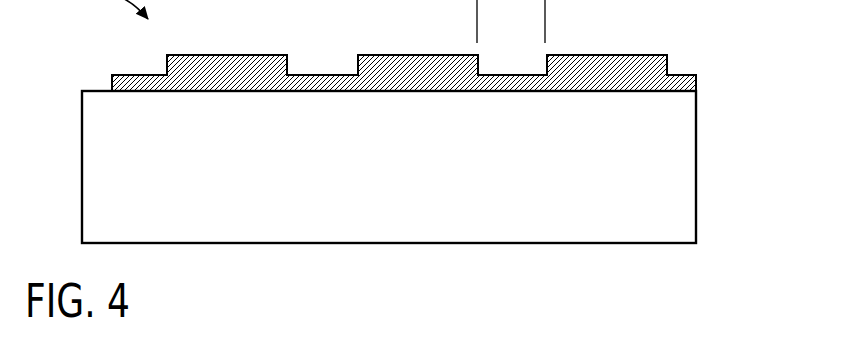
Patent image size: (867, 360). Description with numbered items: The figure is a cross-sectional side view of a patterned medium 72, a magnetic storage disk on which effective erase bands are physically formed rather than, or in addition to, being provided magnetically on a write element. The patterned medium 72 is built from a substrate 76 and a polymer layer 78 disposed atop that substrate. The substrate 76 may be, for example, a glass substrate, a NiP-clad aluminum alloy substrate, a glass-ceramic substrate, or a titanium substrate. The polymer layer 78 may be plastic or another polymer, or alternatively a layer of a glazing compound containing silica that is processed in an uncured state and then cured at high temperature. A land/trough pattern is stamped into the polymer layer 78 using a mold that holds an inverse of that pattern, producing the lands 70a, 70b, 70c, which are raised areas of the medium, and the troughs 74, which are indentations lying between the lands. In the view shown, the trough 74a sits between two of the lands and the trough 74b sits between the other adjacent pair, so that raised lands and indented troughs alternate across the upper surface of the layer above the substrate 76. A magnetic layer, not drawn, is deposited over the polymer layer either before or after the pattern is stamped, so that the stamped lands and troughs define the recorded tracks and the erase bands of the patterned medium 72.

The patterned medium 72 is at (734, 108).
The troughs 74 is at (138, 75).
The land 70a is at (431, 55).
The land 70b is at (613, 55).
The land 70c is at (248, 55).
The trough 74a is at (340, 74).
The trough 74b is at (501, 75).
The substrate 76 is at (694, 160).
The polymer layer 78 is at (658, 55).